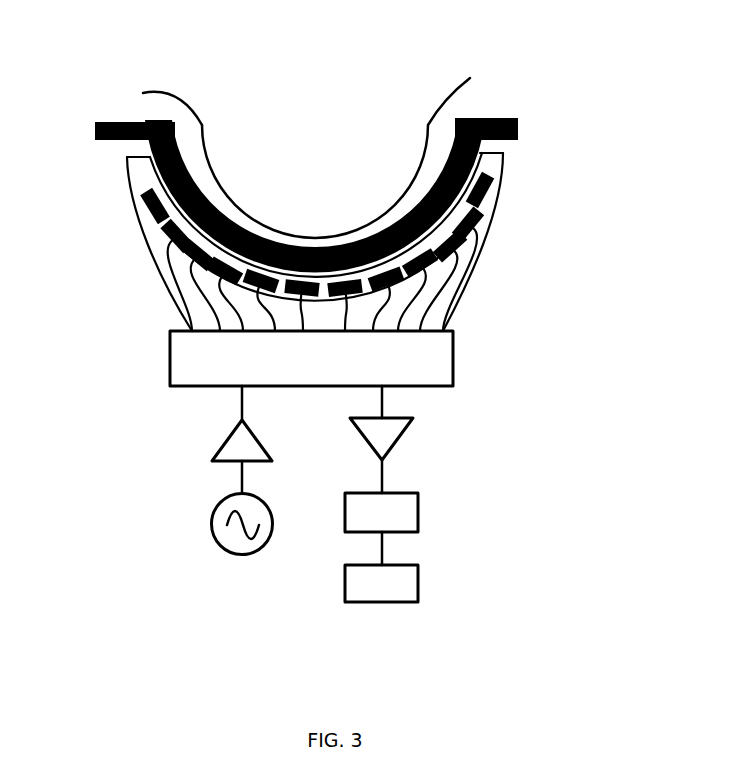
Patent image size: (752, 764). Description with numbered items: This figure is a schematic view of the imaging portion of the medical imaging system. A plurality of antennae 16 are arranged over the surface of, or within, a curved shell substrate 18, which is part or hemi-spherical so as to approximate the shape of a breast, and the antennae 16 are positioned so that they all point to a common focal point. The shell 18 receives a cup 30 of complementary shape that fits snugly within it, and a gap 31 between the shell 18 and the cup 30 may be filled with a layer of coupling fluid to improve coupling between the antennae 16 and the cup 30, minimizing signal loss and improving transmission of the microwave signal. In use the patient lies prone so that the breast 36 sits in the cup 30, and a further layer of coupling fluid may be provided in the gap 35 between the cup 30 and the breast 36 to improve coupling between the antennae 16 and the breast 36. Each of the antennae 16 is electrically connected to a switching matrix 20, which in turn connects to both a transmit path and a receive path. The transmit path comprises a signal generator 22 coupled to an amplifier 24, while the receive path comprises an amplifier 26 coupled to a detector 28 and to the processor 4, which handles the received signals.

The processor 4 is at (414, 577).
The antennae 16 is at (150, 203).
The shell substrate 18 is at (470, 228).
The switching matrix 20 is at (168, 356).
The signal generator 22 is at (211, 526).
The amplifier 24 is at (213, 452).
The amplifier 26 is at (396, 446).
The detector 28 is at (418, 510).
The cup 30 is at (490, 119).
The gap 31 is at (475, 168).
The gap 35 is at (447, 125).
The breast 36 is at (178, 108).